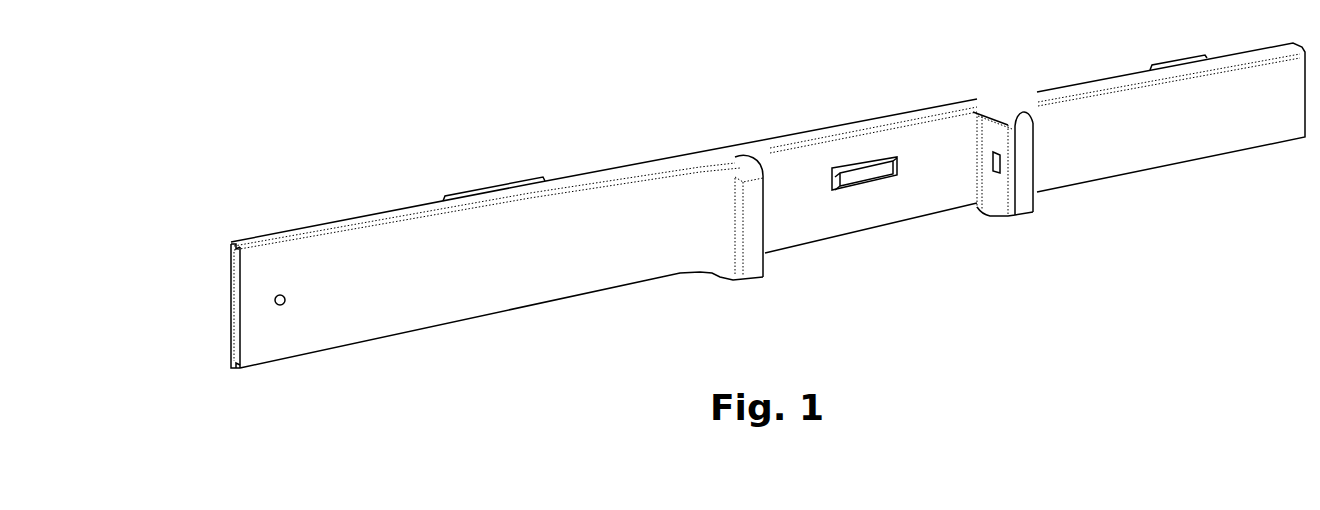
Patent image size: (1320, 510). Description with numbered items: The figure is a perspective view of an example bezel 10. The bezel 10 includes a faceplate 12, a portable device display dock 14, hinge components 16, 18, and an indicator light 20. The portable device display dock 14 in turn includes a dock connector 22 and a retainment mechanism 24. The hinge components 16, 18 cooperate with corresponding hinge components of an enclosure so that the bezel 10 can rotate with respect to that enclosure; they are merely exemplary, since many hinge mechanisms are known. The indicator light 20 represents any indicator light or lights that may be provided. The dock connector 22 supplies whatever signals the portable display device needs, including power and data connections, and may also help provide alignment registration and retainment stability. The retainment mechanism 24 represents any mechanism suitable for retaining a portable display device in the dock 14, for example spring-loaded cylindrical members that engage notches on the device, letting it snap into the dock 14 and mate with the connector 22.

The bezel 10 is at (768, 204).
The faceplate 12 is at (538, 277).
The portable device display dock 14 is at (930, 150).
The hinge component 16 is at (487, 185).
The hinge component 18 is at (1182, 57).
The indicator light 20 is at (282, 306).
The dock connector 22 is at (870, 188).
The retainment mechanism 24 is at (996, 176).